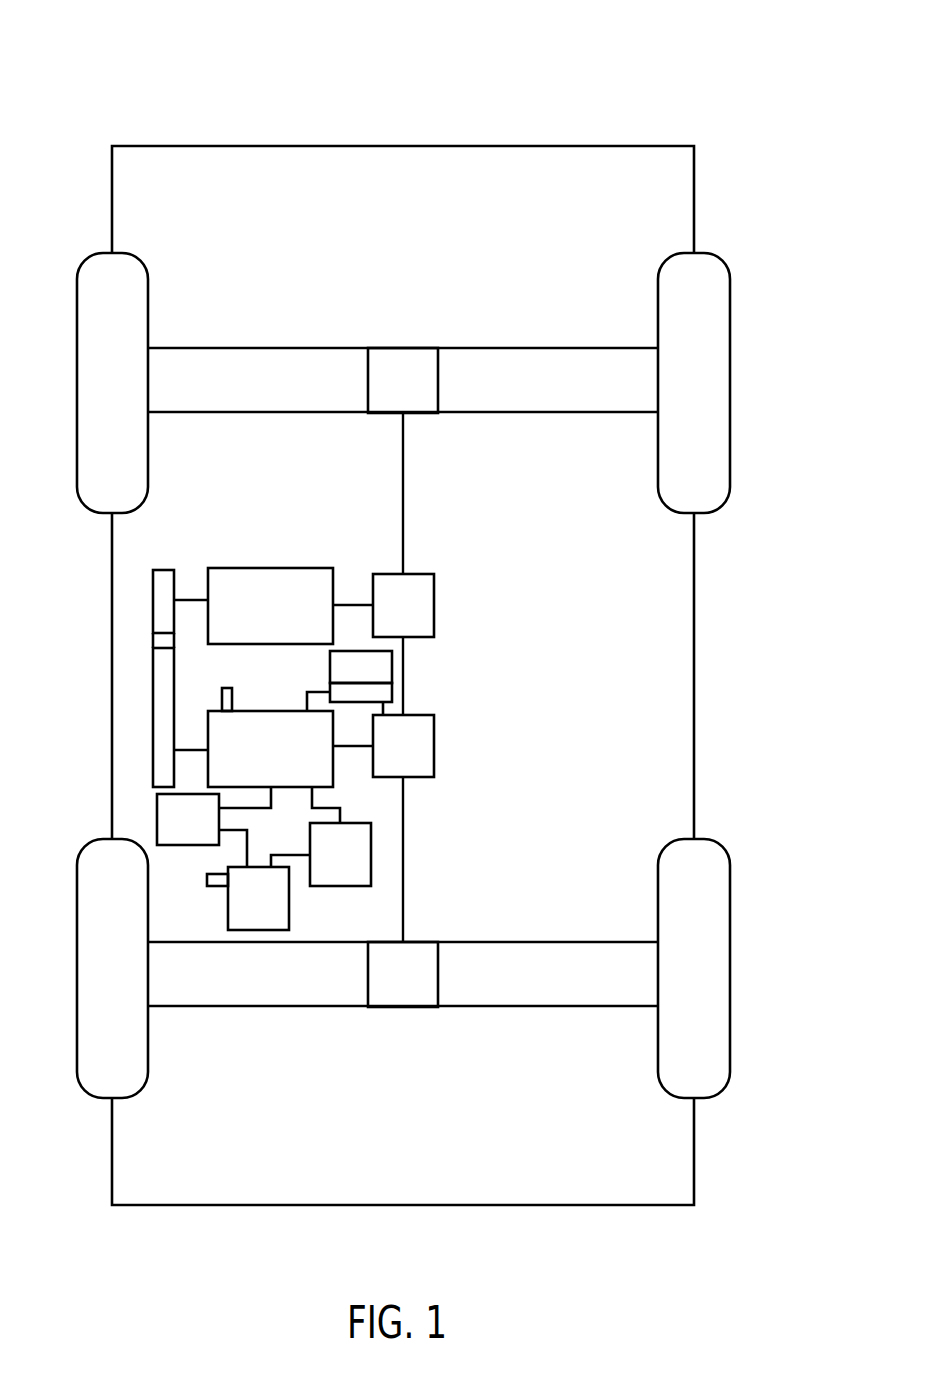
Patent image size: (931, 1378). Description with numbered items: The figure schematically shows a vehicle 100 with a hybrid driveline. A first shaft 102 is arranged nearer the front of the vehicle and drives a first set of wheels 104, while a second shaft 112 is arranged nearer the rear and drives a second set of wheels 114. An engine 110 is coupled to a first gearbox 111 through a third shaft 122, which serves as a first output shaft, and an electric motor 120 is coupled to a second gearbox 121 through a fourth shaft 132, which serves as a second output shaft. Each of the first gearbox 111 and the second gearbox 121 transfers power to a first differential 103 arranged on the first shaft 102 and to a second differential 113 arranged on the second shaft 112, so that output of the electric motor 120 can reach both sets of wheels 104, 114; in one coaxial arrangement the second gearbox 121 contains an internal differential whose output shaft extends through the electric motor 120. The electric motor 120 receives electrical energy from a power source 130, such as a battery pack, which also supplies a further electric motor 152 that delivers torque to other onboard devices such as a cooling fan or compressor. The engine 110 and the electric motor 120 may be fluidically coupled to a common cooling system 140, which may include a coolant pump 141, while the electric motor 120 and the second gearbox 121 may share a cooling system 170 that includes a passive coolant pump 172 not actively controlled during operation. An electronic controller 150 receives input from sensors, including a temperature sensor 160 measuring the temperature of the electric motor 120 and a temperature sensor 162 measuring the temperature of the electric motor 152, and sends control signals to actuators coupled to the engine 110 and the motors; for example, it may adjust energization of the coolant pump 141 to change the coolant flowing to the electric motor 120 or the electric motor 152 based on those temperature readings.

The vehicle 100 is at (737, 41).
The first shaft 102 is at (558, 346).
The first differential 103 is at (403, 380).
The first set of wheels 104 is at (84, 261).
The engine 110 is at (253, 606).
The first gearbox 111 is at (403, 605).
The second shaft 112 is at (568, 942).
The second differential 113 is at (403, 974).
The second set of wheels 114 is at (89, 843).
The electric motor 120 is at (257, 757).
The second gearbox 121 is at (403, 739).
The third shaft 122 is at (344, 600).
The power source 130 is at (202, 830).
The fourth shaft 132 is at (342, 748).
The cooling system 140 is at (153, 683).
The coolant pump 141 is at (153, 643).
The electronic controller 150 is at (321, 854).
The electric motor 152 is at (258, 898).
The temperature sensor 160 is at (227, 688).
The temperature sensor 162 is at (205, 878).
The cooling system 170 is at (392, 665).
The passive coolant pump 172 is at (392, 692).